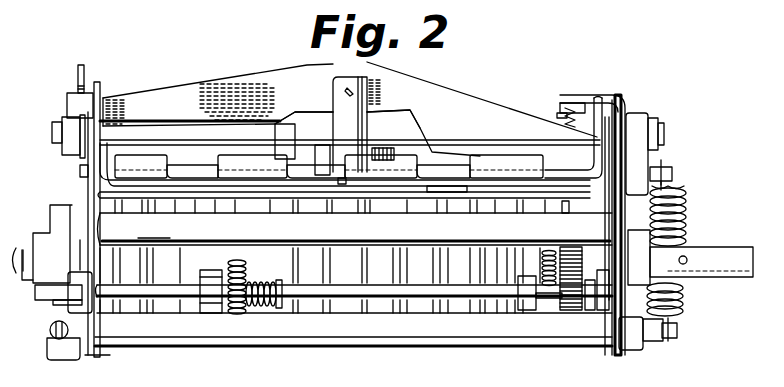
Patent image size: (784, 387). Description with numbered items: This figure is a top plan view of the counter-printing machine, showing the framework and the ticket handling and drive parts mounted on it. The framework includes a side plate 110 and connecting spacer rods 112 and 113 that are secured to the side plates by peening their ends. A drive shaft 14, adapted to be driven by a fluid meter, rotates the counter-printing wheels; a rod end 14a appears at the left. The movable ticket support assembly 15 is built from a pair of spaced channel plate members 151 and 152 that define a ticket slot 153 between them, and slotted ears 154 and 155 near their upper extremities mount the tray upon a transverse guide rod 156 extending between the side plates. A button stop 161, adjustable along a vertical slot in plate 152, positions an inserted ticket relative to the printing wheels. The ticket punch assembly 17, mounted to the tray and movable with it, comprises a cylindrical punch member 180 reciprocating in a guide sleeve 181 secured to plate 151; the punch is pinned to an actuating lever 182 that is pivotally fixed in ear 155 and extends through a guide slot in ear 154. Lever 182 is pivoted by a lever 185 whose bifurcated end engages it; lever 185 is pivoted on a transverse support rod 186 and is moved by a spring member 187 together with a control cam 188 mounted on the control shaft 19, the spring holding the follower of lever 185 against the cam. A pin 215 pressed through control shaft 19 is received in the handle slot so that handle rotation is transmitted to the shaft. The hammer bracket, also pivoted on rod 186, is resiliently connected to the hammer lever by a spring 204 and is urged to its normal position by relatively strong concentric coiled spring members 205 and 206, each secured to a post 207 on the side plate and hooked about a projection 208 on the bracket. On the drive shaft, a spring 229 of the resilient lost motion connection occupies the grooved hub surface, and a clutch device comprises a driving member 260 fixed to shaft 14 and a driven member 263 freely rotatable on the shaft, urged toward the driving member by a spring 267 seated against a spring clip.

The drive shaft 14 is at (385, 296).
The rod end flange 14a is at (43, 306).
The ticket support assembly 15 is at (311, 158).
The ticket punch assembly 17 is at (388, 81).
The control shaft 19 is at (724, 277).
The side plate 110 is at (90, 199).
The spacer rod 112 is at (381, 338).
The spacer rod 113 is at (355, 229).
The channel plate member 151 is at (519, 142).
The channel plate member 152 is at (450, 200).
The ticket slot 153 is at (216, 190).
The slotted ear 154 is at (107, 97).
The slotted ear 155 is at (594, 142).
The transverse guide rod 156 is at (190, 152).
The button stop 161 is at (365, 188).
The cylindrical punch member 180 is at (340, 109).
The guide sleeve 181 is at (381, 146).
The actuating lever 182 is at (70, 103).
The lever 185 is at (82, 181).
The transverse support rod 186 is at (664, 136).
The spring member 187 is at (52, 341).
The control cam 188 is at (52, 226).
The spring 204 is at (553, 110).
The coiled spring member 205 is at (688, 216).
The coiled spring member 206 is at (689, 187).
The post 207 is at (678, 331).
The projection 208 is at (675, 175).
The pin 215 is at (687, 264).
The spring 229 is at (548, 273).
The driving member 260 is at (200, 285).
The driven member 263 is at (227, 266).
The spring 267 is at (256, 283).